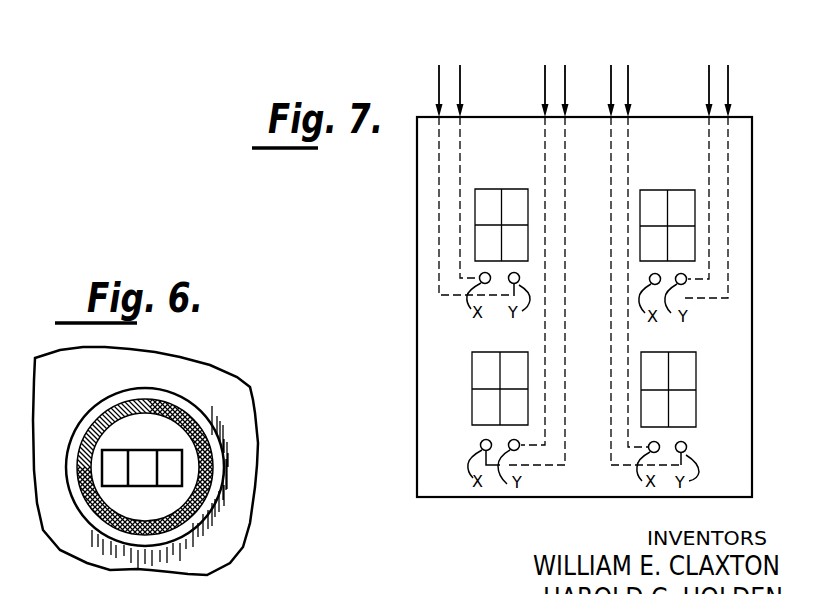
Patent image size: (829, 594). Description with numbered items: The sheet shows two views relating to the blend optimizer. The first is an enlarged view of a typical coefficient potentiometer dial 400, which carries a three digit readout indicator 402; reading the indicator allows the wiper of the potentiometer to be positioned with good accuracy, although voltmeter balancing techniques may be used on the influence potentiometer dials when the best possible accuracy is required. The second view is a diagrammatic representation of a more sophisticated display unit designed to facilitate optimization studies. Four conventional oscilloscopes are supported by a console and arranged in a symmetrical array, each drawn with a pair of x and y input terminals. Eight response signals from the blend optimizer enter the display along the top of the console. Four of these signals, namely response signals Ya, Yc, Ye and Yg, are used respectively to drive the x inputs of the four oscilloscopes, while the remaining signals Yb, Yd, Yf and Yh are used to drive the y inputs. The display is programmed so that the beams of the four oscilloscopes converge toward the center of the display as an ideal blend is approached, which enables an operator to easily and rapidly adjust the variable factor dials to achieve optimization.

In FIG. 6, the potentiometer dial 400 is at (90, 411).
In FIG. 6, the three digit readout indicator 402 is at (140, 450).
In FIG. 7, the response signal Y_A Ya is at (439, 82).
In FIG. 7, the response signal Y_B Yb is at (459, 88).
In FIG. 7, the response signal Y_C Yc is at (565, 83).
In FIG. 7, the response signal Y_D Yd is at (545, 87).
In FIG. 7, the response signal Y_E Ye is at (627, 80).
In FIG. 7, the response signal Y_F Yf is at (610, 82).
In FIG. 7, the response signal Y_G Yg is at (729, 80).
In FIG. 7, the response signal Y_H Yh is at (709, 90).